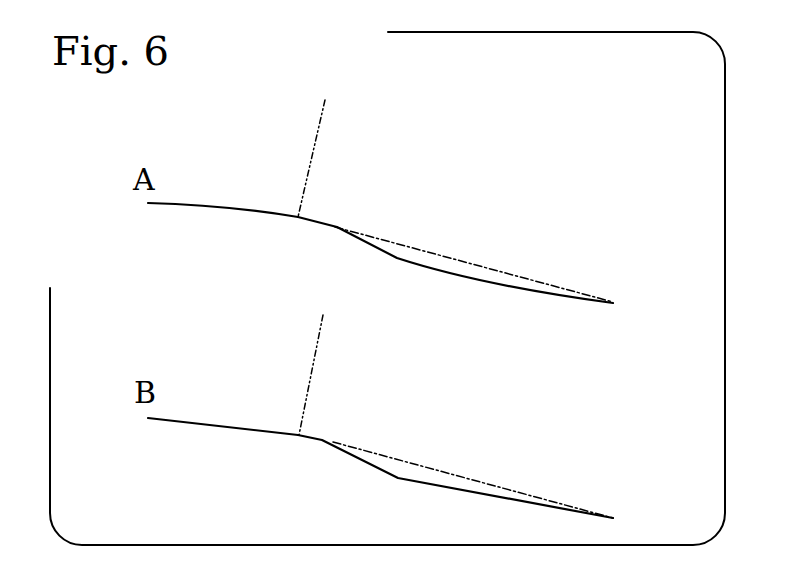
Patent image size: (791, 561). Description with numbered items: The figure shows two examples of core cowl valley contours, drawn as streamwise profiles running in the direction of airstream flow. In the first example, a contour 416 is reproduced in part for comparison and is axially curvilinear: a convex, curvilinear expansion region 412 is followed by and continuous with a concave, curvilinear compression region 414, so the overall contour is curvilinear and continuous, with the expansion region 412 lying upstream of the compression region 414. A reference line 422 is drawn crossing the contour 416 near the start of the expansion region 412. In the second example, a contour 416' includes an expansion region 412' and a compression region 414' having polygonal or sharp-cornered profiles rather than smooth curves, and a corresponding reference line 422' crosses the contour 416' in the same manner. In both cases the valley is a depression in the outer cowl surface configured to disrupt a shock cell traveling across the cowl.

In FIG. 6A, the contour 416 is at (223, 231).
In FIG. 6A, the reference line 422 is at (296, 158).
In FIG. 6A, the expansion region 412 is at (455, 244).
In FIG. 6A, the compression region 414 is at (474, 257).
In FIG. 6B, the contour 416' is at (223, 447).
In FIG. 6B, the reference line (alternative) 422' is at (295, 375).
In FIG. 6B, the expansion region 412' is at (455, 460).
In FIG. 6B, the compression region 414' is at (473, 474).